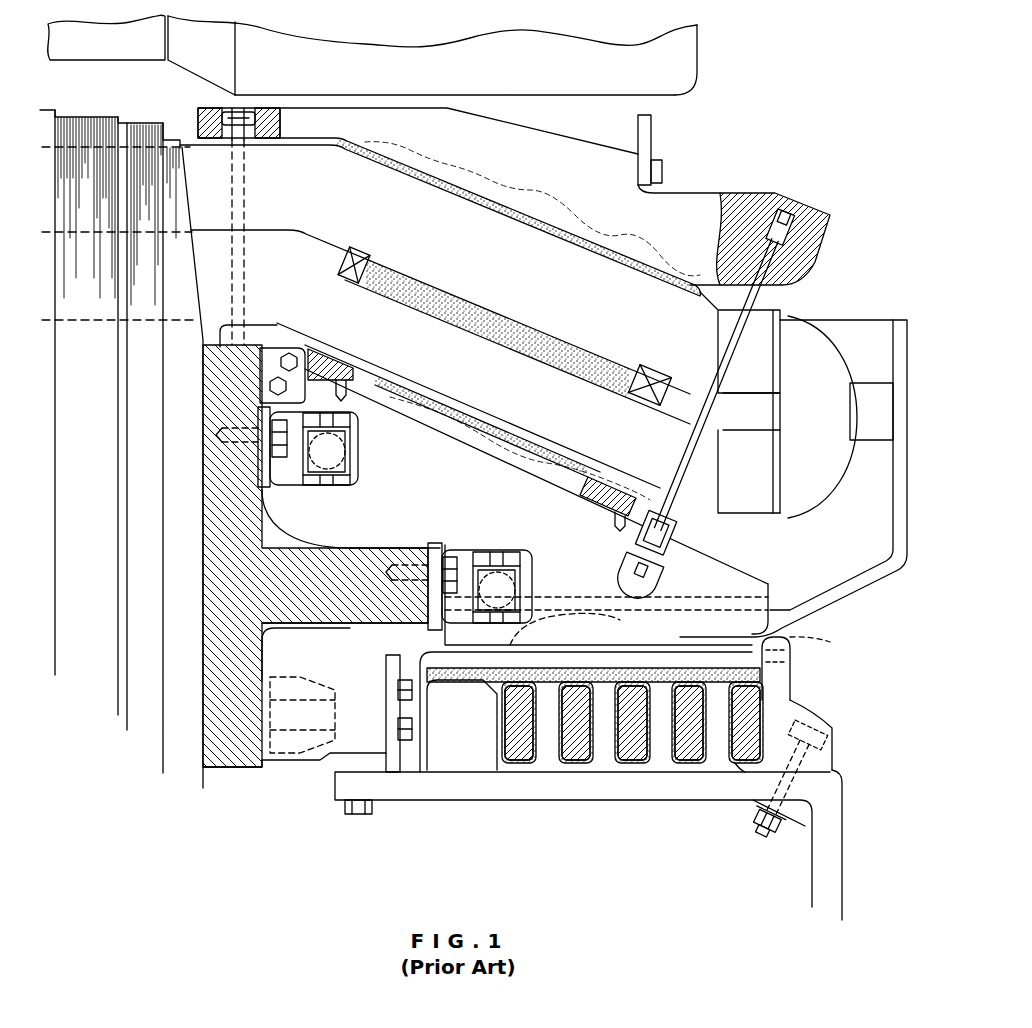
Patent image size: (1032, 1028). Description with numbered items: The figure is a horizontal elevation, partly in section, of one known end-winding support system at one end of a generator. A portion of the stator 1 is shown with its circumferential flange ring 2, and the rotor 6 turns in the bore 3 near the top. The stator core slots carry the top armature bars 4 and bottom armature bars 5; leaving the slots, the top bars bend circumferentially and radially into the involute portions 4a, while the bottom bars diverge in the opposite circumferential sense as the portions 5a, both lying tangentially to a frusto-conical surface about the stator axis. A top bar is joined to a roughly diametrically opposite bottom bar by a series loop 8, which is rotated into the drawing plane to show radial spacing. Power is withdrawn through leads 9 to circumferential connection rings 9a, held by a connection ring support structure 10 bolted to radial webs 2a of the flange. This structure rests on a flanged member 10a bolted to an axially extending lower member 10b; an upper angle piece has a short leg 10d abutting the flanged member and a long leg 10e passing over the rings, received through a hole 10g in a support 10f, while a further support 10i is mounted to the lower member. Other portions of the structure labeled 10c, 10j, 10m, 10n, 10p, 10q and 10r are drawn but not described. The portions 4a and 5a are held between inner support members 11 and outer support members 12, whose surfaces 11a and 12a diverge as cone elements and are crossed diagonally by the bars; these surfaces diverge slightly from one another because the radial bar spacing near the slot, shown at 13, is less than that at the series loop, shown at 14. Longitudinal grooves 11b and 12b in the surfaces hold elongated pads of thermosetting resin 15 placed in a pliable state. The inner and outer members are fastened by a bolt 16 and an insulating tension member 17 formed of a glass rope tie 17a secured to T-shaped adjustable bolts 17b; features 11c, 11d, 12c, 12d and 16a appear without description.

The stator 1 is at (76, 470).
The circumferential flange ring 2 is at (240, 745).
The radial webs 2a is at (318, 757).
The bore 3 is at (88, 117).
The top armature bars 4 is at (282, 190).
The top bar extending portions 4a is at (480, 268).
The bottom armature bars 5 is at (270, 287).
The bottom bar extending portions 5a is at (530, 97).
The rotor 6 is at (111, 51).
The series loop 8 is at (840, 420).
The leads 9 is at (848, 586).
The circumferential connection rings 9a is at (750, 702).
The connection ring support structure 10 is at (538, 835).
The flanged member 10a is at (388, 769).
The lower member 10b is at (442, 792).
The heat sink top plate 10c is at (475, 657).
The short leg 10d is at (416, 713).
The long leg 10e is at (657, 650).
The support 10f is at (840, 755).
The hole 10g is at (832, 642).
The support 10i is at (743, 774).
The fixing nut 10j is at (480, 762).
The fin 10m is at (653, 749).
The fin insulating jacket 10n is at (590, 752).
The heat sink post 10p is at (716, 683).
The bolt pocket 10q is at (797, 822).
The fixing bolt nut 10r is at (750, 840).
The inner support members 11 is at (563, 172).
The support surfaces 11a is at (557, 230).
The longitudinal grooves 11b is at (460, 180).
The insulating member layer 11c is at (492, 187).
The insulating block 11d is at (227, 100).
The outer support members 12 is at (415, 501).
The support surfaces 12a is at (487, 440).
The longitudinal grooves 12b is at (447, 413).
The clamp insulating block 12c is at (530, 463).
The clamp bracket plate 12d is at (278, 322).
The radial spacing near the slot 13 is at (297, 232).
The radial spacing at the series loop 14 is at (688, 410).
The elongated pads of thermosetting resin 15 is at (688, 290).
The bolt 16 is at (248, 107).
The bolt shaft 16a is at (230, 200).
The insulating tension member 17 is at (723, 413).
The glass rope tie 17a is at (738, 347).
The T-shaped adjustable bolts 17b is at (783, 268).